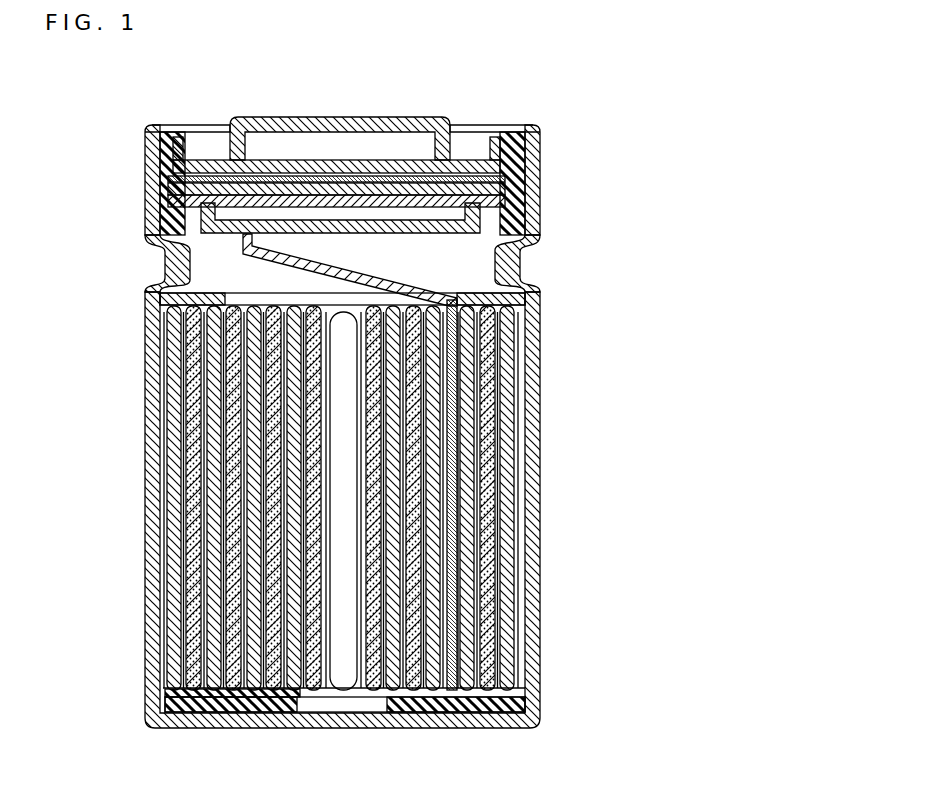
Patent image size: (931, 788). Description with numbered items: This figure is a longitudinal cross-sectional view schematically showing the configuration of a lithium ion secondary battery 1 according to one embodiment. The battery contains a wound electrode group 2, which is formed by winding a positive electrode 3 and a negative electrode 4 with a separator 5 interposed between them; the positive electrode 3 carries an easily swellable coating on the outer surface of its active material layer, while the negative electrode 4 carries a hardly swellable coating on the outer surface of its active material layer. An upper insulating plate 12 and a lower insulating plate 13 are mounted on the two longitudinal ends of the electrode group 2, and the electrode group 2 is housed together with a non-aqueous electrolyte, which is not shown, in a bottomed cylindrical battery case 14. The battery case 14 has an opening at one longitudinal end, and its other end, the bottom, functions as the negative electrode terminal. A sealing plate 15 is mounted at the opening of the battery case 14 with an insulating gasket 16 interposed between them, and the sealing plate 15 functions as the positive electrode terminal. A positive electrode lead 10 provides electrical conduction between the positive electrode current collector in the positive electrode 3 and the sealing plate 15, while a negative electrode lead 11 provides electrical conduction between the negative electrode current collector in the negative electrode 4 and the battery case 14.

The lithium ion secondary battery 1 is at (180, 107).
The electrode group 2 is at (596, 378).
The positive electrode 3 is at (500, 417).
The negative electrode 4 is at (480, 442).
The separator 5 is at (472, 450).
The positive electrode lead 10 is at (312, 270).
The negative electrode lead 11 is at (247, 710).
The upper insulating plate 12 is at (490, 294).
The lower insulating plate 13 is at (430, 697).
The battery case 14 is at (530, 575).
The sealing plate 15 is at (306, 122).
The insulating gasket 16 is at (532, 130).